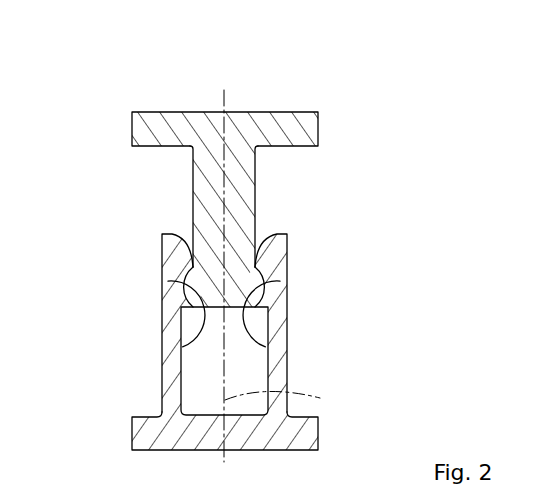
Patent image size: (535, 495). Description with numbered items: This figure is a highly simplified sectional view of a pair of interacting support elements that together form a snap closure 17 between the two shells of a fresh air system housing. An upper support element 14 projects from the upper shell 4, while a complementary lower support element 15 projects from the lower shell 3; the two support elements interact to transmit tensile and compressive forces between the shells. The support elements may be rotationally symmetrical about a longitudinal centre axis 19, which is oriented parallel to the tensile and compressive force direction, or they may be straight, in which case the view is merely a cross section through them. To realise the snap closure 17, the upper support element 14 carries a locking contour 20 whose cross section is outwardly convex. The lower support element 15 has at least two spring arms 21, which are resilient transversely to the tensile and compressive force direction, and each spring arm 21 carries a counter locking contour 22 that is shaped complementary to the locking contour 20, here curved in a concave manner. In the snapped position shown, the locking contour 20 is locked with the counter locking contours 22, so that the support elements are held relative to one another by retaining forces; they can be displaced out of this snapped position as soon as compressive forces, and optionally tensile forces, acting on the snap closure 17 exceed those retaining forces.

The snap closure 17 is at (351, 215).
The upper shell 4 is at (177, 112).
The upper support element 14 is at (195, 187).
The locking contour 20 is at (190, 300).
The lower support element 15 is at (162, 313).
The spring arm 21 is at (170, 380).
The lower shell 3 is at (132, 433).
The counter locking contour 22 is at (183, 346).
The longitudinal centre axis 19 is at (315, 397).